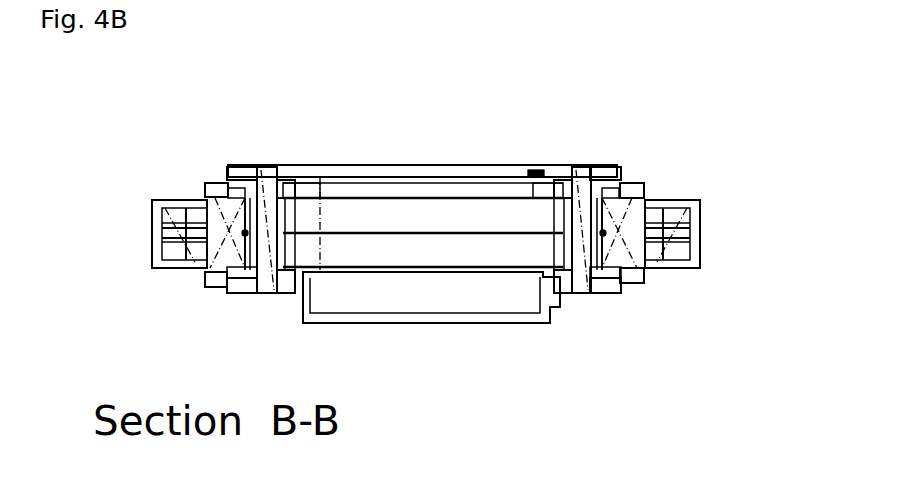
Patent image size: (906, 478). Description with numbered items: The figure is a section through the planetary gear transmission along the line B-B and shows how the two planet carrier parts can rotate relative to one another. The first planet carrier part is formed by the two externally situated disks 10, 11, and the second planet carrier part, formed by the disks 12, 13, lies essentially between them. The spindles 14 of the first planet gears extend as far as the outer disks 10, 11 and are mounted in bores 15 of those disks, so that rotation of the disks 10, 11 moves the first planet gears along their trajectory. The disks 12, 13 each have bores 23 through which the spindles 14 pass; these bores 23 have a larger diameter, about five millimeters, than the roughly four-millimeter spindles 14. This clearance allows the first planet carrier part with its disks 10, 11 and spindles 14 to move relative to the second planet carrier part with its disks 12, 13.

The externally situated disk 10 is at (605, 290).
The externally situated disk 11 is at (531, 170).
The disk 12 is at (612, 272).
The disk 13 is at (645, 192).
The spindle 14 is at (277, 167).
The bore 15 is at (238, 168).
The bore 23 is at (207, 188).